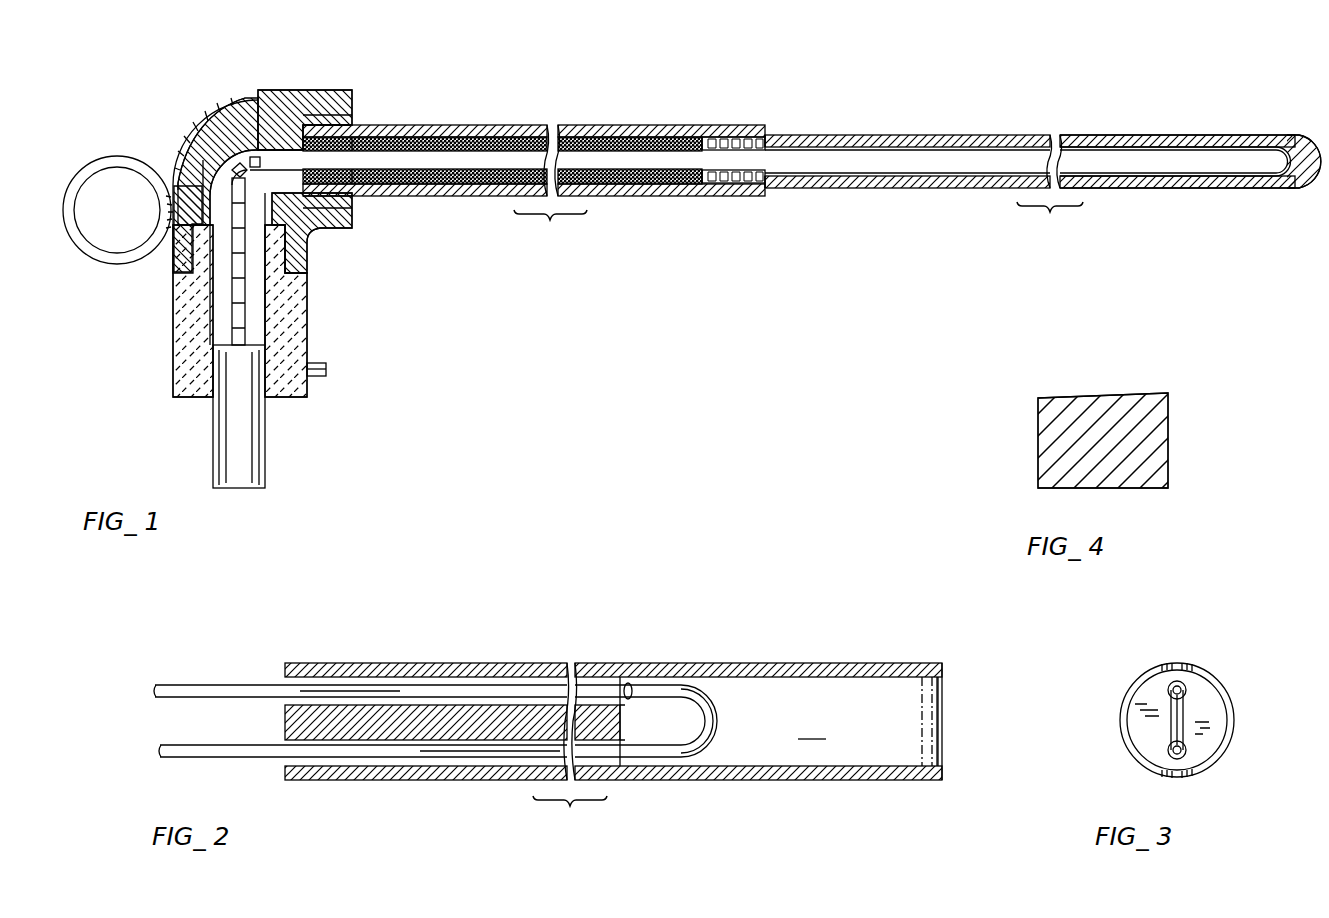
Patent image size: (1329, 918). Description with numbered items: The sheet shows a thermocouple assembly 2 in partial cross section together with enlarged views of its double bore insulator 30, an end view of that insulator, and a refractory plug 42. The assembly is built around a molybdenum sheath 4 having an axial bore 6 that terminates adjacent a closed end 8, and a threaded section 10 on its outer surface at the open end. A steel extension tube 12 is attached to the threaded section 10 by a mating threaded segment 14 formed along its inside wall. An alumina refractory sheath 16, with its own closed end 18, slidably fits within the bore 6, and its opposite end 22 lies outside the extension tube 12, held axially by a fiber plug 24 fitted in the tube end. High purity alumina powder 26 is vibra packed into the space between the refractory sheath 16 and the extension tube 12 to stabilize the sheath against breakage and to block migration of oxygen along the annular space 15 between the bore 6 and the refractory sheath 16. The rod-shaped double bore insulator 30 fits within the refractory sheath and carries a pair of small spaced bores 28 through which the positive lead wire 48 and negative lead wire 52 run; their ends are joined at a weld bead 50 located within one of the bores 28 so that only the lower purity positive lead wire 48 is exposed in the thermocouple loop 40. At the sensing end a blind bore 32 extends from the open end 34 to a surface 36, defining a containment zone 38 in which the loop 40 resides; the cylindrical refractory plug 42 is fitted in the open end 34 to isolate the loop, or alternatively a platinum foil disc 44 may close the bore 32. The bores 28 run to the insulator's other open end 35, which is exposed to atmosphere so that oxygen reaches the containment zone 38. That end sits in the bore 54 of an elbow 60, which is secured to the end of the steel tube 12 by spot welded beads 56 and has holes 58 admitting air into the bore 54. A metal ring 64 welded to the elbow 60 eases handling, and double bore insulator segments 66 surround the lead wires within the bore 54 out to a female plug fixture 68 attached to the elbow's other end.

In FIG. 1, the thermocouple assembly 2 is at (876, 130).
In FIG. 1, the molybdenum sheath 4 is at (921, 135).
In FIG. 1, the axial bore 6 is at (970, 148).
In FIG. 1, the closed end 8 is at (1325, 150).
In FIG. 1, the threaded section 10 is at (745, 140).
In FIG. 1, the steel extension tube 12 is at (515, 126).
In FIG. 1, the mating threaded segment 14 is at (729, 138).
In FIG. 1, the annular space 15 is at (1032, 140).
In FIG. 1, the refractory sheath 16 is at (1112, 150).
In FIG. 1, the closed end 18 is at (1287, 150).
In FIG. 1, the end of refractory sheath 22 is at (266, 155).
In FIG. 1, the fiber plug 24 is at (360, 142).
In FIG. 1, the alumina powder 26 is at (430, 146).
In FIG. 2, the spaced bores 28 is at (405, 682).
In FIG. 3, the spaced bores 28 is at (1182, 674).
In FIG. 1, the double bore insulator 30 is at (253, 152).
In FIG. 2, the double bore insulator 30 is at (528, 665).
In FIG. 3, the double bore insulator 30 is at (1236, 722).
In FIG. 2, the blind bore 32 is at (868, 676).
In FIG. 3, the blind bore 32 is at (1132, 724).
In FIG. 2, the open end 34 is at (944, 722).
In FIG. 1, the open end 35 is at (243, 128).
In FIG. 2, the open end 35 is at (285, 728).
In FIG. 2, the surface 36 is at (620, 730).
In FIG. 2, the containment zone 38 is at (812, 724).
In FIG. 2, the thermocouple loop 40 is at (722, 722).
In FIG. 3, the thermocouple loop 40 is at (1185, 722).
In FIG. 4, the cylindrical plug 42 is at (1140, 395).
In FIG. 2, the foil disc 44 is at (937, 750).
In FIG. 2, the positive lead wire 48 is at (185, 745).
In FIG. 2, the weld bead 50 is at (626, 684).
In FIG. 2, the negative lead wire 52 is at (228, 685).
In FIG. 1, the bore 54 is at (216, 314).
In FIG. 1, the spot welded beads 56 is at (350, 202).
In FIG. 1, the holes 58 is at (192, 168).
In FIG. 1, the elbow 60 is at (180, 266).
In FIG. 1, the metal ring 64 is at (92, 258).
In FIG. 1, the double bore insulator segments 66 is at (248, 312).
In FIG. 1, the female plug fixture 68 is at (262, 460).